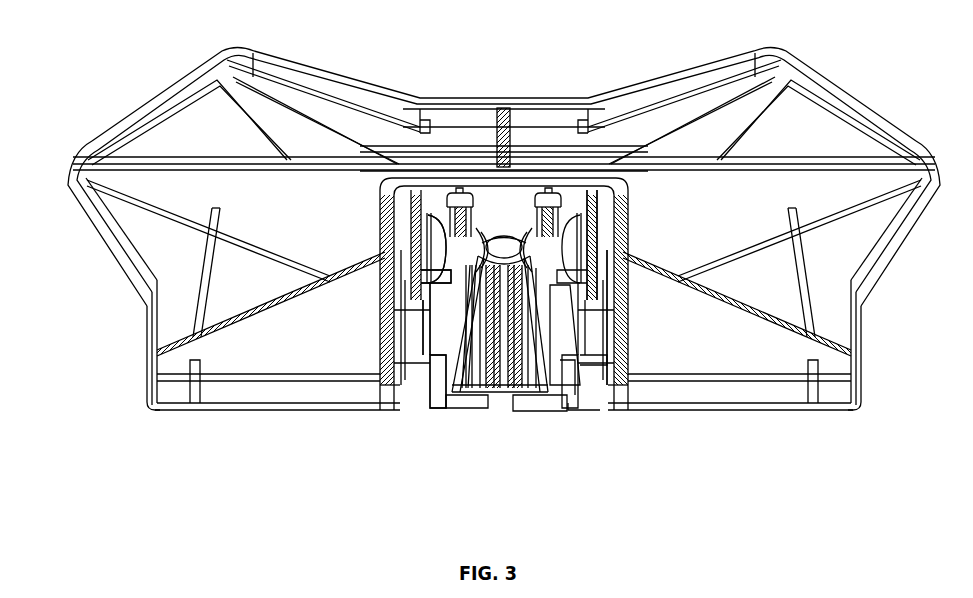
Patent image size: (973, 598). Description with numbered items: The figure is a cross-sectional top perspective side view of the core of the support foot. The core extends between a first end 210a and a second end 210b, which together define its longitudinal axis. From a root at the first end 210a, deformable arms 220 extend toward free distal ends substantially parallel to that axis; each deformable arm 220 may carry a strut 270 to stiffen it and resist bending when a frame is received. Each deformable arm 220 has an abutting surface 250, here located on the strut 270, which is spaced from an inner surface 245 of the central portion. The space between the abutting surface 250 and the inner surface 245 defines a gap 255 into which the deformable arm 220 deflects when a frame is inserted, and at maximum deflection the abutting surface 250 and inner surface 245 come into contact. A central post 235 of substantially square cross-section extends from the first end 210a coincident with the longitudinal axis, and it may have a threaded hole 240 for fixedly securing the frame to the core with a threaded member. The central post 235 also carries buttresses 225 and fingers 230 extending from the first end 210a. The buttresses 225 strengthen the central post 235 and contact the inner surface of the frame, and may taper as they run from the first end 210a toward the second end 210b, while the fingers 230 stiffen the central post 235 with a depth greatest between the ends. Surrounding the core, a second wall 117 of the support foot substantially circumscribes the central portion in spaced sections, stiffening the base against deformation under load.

The second wall 117 is at (196, 323).
The first end 210a is at (564, 418).
The second end 210b is at (580, 186).
The deformable arm 220 is at (552, 195).
The buttress 225 is at (464, 350).
The finger 230 is at (490, 375).
The central post 235 is at (526, 233).
The threaded hole 240 is at (502, 228).
The inner surface 245 is at (423, 278).
The abutting surface 250 is at (425, 282).
The gap 255 is at (418, 200).
The strut 270 is at (584, 348).